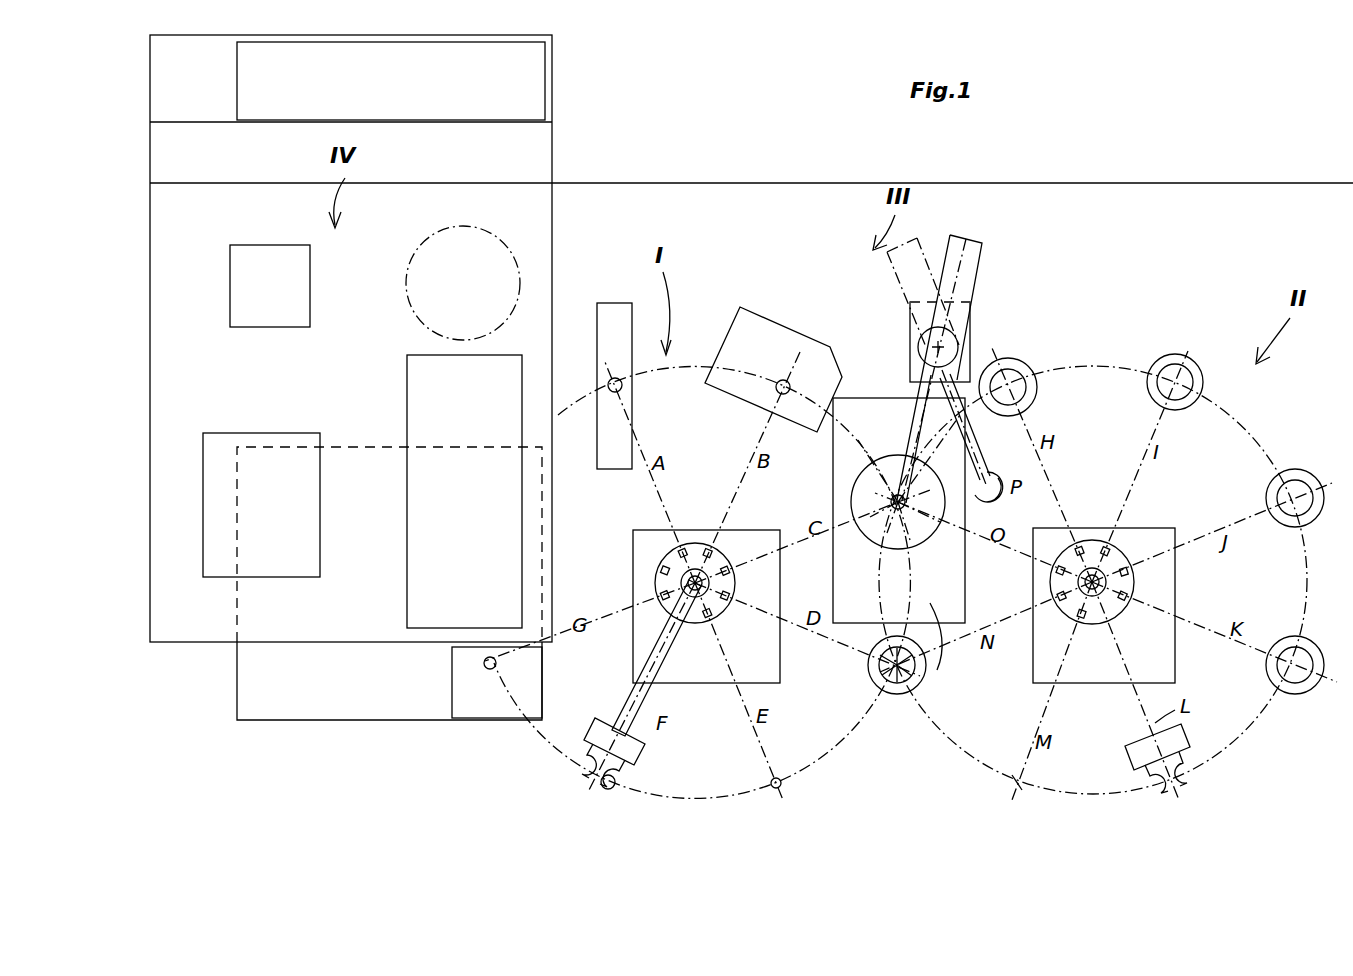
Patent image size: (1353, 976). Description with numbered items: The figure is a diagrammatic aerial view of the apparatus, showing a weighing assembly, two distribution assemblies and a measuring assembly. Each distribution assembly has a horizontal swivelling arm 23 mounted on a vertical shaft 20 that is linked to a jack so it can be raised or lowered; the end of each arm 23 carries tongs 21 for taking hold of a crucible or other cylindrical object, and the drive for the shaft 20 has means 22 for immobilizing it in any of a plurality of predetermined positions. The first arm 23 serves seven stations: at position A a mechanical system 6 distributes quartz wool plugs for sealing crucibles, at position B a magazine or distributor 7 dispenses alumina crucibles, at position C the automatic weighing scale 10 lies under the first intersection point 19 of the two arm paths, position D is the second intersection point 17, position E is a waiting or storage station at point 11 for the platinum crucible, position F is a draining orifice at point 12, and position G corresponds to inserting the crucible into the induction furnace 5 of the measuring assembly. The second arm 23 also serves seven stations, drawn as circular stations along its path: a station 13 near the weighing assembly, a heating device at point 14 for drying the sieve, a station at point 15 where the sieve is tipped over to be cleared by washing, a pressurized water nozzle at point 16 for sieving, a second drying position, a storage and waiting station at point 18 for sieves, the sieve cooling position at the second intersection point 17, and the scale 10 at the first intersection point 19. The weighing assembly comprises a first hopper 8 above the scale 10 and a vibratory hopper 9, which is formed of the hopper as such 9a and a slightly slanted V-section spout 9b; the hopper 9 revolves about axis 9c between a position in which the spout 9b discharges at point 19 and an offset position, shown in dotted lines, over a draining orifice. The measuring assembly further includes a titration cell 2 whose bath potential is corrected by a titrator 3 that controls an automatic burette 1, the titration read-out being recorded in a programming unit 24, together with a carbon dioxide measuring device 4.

The automatic burette 1 is at (255, 262).
The titration cell 2 is at (460, 245).
The titrator 3 is at (215, 450).
The CO2 measuring device 4 is at (418, 505).
The induction furnace 5 is at (480, 710).
The mechanical system for distributing quartz wool plugs 6 is at (610, 310).
The magazine or distributor 7 is at (742, 325).
The first hopper 8 is at (893, 458).
The vibratory hopper 9 is at (935, 255).
The hopper as such 9a is at (978, 247).
The spout 9b is at (948, 395).
The axis 9c is at (935, 345).
The weighing scale 10 is at (948, 650).
The point 11 is at (782, 785).
The point 12 is at (597, 790).
The station 13 is at (1012, 375).
The point 14 is at (1185, 365).
The point 15 is at (1300, 478).
The point 16 is at (1300, 655).
The second intersection point 17 is at (895, 692).
The point 18 is at (1018, 778).
The intersection point 19 is at (905, 482).
The vertical shaft 20 is at (688, 582).
The tongs 21 is at (632, 783).
The means for immobilizing 22 is at (722, 560).
The swivelling arm 23 is at (650, 667).
The programming unit 24 is at (527, 80).